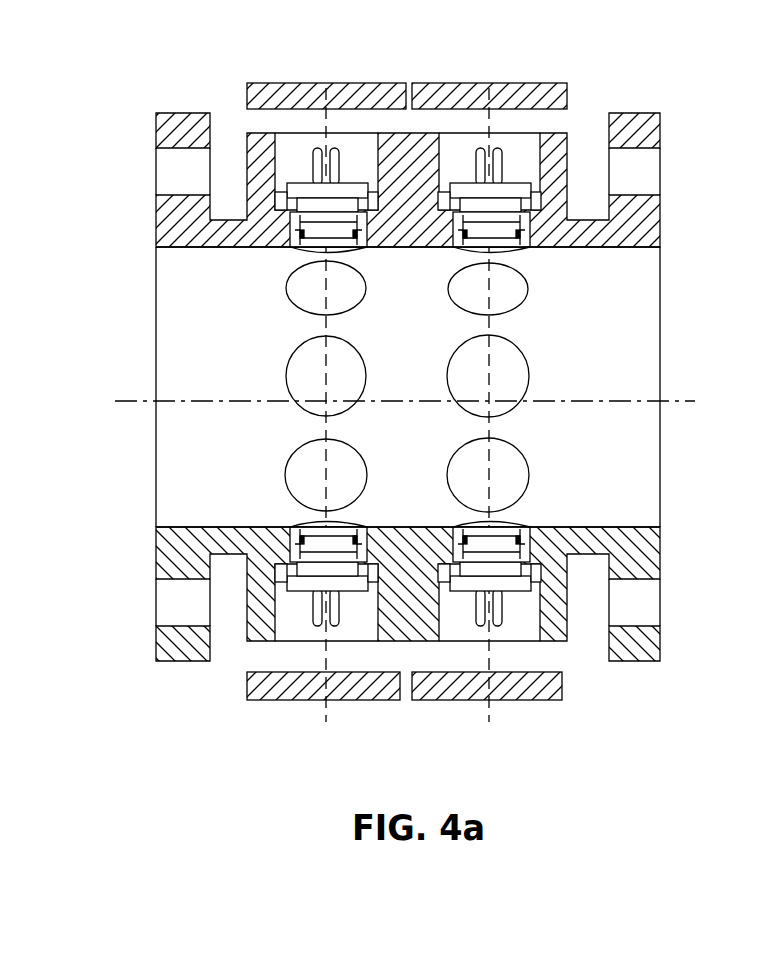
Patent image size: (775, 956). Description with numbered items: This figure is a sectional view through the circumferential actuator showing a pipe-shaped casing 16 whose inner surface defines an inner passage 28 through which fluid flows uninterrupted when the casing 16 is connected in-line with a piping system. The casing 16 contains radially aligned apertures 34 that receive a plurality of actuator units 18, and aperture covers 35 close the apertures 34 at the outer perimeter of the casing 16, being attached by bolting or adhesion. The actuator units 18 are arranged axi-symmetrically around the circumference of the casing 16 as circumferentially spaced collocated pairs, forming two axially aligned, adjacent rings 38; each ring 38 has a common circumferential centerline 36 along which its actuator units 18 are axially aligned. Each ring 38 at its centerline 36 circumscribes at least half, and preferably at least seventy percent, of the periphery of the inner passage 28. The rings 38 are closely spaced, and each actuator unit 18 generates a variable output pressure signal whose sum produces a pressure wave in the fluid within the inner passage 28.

The casing 16 is at (640, 208).
The actuator unit 18 is at (560, 643).
The inner passage 28 is at (686, 317).
The aperture 34 is at (506, 159).
The aperture cover 35 is at (468, 93).
The circumferential centerline 36 is at (489, 325).
The ring 38 is at (465, 660).